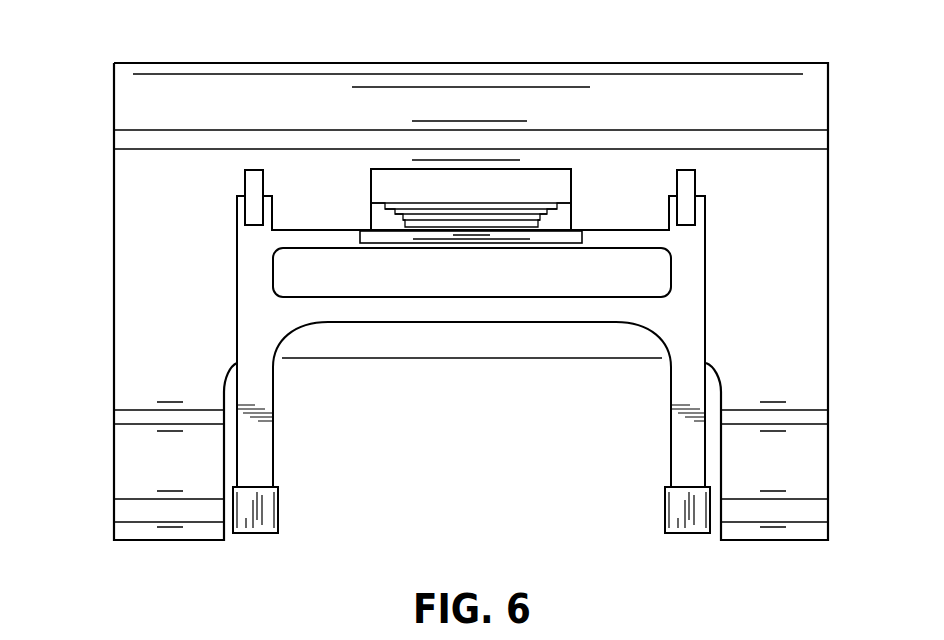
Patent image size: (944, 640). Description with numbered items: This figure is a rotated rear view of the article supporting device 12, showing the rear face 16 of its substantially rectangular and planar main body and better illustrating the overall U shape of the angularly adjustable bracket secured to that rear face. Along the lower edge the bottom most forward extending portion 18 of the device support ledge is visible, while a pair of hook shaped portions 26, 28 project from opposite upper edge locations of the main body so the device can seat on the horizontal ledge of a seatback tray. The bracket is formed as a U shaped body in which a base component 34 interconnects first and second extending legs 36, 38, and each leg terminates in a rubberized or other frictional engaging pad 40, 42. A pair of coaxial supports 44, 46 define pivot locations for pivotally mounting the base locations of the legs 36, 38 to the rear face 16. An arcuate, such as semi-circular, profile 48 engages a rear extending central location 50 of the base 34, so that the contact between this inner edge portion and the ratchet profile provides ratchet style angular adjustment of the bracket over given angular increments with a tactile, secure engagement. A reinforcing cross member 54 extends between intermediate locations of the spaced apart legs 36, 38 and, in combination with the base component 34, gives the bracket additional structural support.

The support device 12 is at (107, 354).
The rear face 16 is at (194, 287).
The bottom most forward extending portion 18 is at (294, 62).
The hook shaped portion 26 is at (172, 542).
The hook shaped portion 28 is at (776, 542).
The base component 34 is at (328, 238).
The first extending leg 36 is at (262, 440).
The second extending leg 38 is at (683, 450).
The frictional engaging pad 40 is at (270, 510).
The frictional engaging pad 42 is at (677, 510).
The coaxial support 44 is at (250, 217).
The coaxial support 46 is at (692, 217).
The arcuate profile 48 is at (480, 217).
The rear extending central location 50 is at (557, 233).
The reinforcing cross member 54 is at (477, 313).